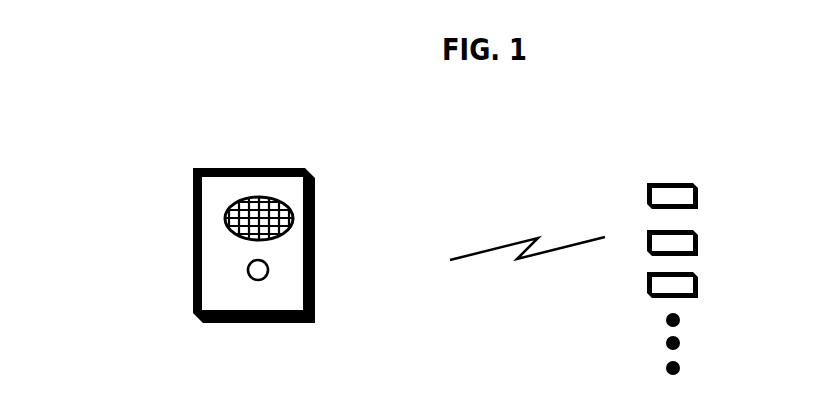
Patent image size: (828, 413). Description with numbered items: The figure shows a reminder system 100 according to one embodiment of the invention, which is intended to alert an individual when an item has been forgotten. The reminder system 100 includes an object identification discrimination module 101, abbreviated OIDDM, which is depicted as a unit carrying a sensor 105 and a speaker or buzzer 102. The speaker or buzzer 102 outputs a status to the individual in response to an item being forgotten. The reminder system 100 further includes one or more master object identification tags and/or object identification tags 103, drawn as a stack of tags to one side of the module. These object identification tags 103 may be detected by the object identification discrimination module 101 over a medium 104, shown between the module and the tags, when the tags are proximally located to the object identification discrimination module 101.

The reminder system 100 is at (300, 121).
The object identification discrimination module 101 is at (155, 239).
The speaker or buzzer 102 is at (299, 193).
The object identification tags 103 is at (672, 261).
The medium 104 is at (527, 223).
The sensor 105 is at (288, 289).